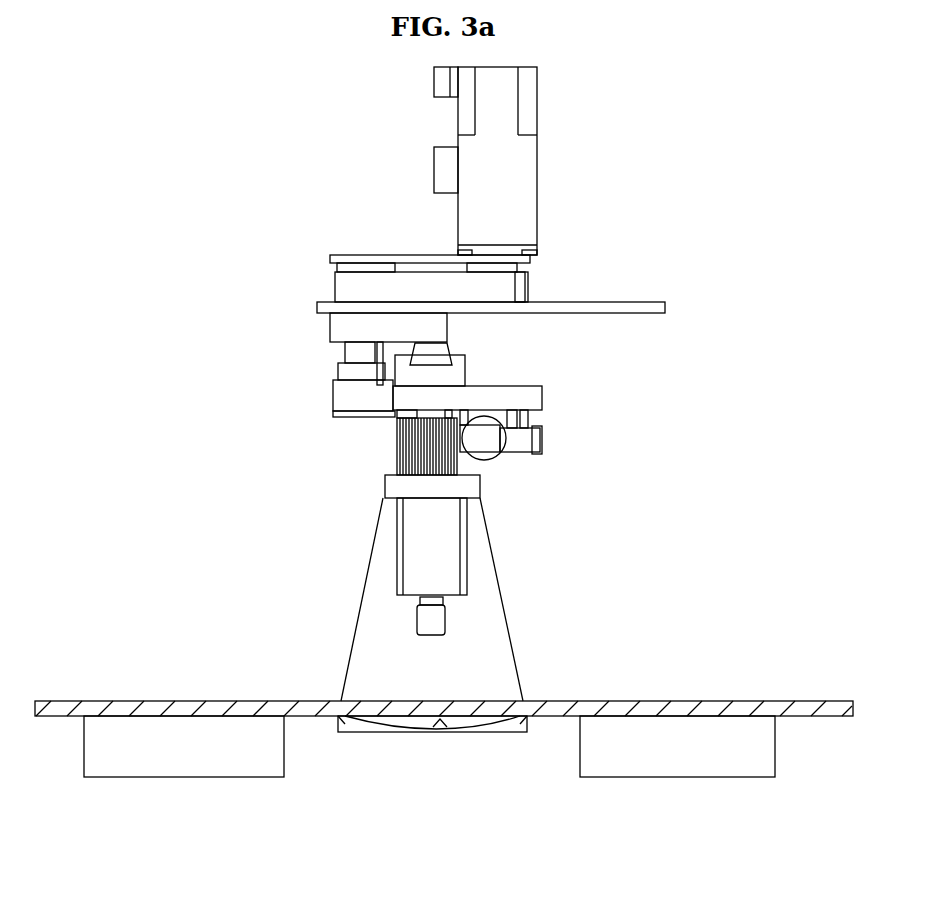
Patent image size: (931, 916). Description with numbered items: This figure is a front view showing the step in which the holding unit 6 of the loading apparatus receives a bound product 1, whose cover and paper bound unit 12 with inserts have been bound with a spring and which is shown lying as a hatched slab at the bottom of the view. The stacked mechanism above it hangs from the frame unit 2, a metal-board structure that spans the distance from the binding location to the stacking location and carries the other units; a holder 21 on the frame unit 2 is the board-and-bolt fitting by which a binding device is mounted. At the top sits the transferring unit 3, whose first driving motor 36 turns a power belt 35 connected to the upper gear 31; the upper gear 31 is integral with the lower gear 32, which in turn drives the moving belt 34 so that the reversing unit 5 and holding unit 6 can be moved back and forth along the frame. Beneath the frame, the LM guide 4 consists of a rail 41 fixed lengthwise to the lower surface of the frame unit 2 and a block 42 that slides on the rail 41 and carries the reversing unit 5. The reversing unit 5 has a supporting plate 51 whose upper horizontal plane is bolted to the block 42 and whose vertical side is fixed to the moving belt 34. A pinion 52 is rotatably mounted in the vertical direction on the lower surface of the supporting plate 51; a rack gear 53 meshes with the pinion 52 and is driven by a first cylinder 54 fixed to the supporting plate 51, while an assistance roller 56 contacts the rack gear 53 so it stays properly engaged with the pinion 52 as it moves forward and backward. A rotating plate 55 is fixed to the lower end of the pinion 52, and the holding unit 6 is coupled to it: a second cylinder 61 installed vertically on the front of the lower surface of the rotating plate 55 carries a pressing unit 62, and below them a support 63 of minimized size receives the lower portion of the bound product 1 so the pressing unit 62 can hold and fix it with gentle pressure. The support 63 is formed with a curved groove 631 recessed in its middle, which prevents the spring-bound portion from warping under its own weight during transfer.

The bound product 1 is at (444, 686).
The paper bound unit 12 is at (785, 706).
The frame unit 2 is at (463, 352).
The holder 21 is at (658, 302).
The transferring unit 3 is at (437, 184).
The upper gear 31 is at (335, 263).
The lower gear 32 is at (338, 375).
The moving belt 34 is at (340, 398).
The power belt 35 is at (430, 285).
The first driving motor 36 is at (525, 192).
The LM guide 4 is at (483, 351).
The rail 41 is at (430, 347).
The block 42 is at (468, 372).
The reversing unit 5 is at (529, 446).
The supporting plate 51 is at (528, 397).
The pinion 52 is at (400, 455).
The rack gear 53 is at (488, 455).
The first cylinder 54 is at (505, 460).
The rotating plate 55 is at (393, 490).
The assistance roller 56 is at (538, 438).
The holding unit 6 is at (474, 648).
The second cylinder 61 is at (458, 560).
The pressing unit 62 is at (420, 622).
The support 63 is at (432, 757).
The curved groove 631 is at (438, 722).